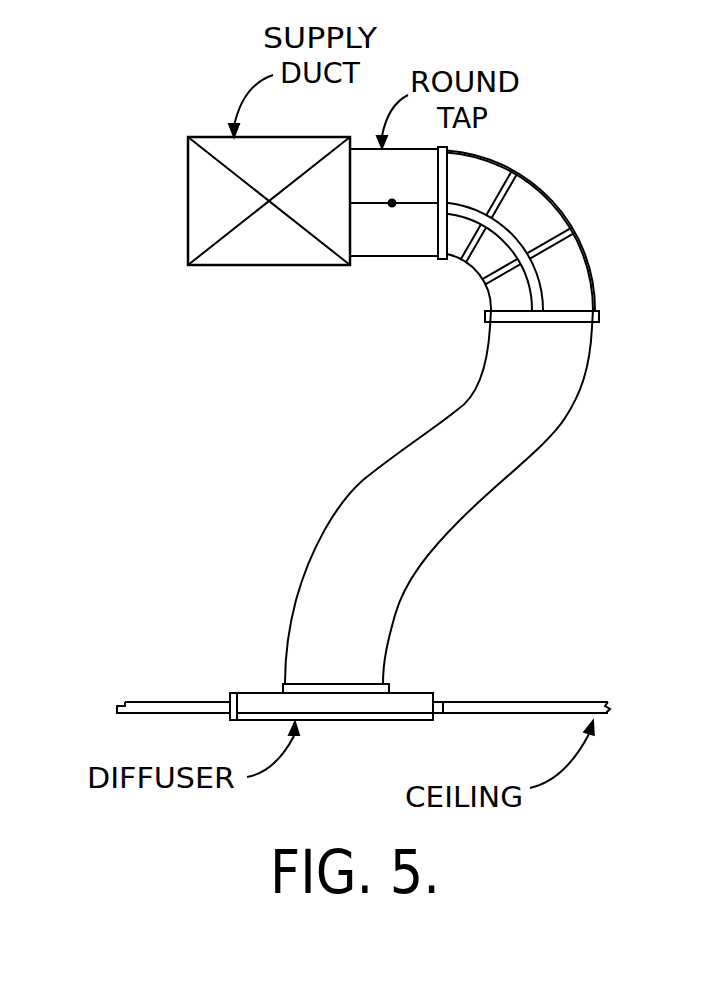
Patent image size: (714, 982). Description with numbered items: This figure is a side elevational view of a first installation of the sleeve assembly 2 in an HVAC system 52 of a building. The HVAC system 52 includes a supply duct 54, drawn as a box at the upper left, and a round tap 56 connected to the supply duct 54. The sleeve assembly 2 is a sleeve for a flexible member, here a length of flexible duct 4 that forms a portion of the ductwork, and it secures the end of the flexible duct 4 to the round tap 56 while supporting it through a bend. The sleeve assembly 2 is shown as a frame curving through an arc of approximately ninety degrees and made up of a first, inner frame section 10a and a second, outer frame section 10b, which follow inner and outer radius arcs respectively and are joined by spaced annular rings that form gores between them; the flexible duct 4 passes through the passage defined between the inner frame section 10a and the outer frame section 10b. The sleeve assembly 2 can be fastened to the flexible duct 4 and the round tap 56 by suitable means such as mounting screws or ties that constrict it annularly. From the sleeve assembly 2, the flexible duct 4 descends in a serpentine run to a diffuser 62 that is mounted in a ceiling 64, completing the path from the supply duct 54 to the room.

The sleeve assembly 2 is at (543, 237).
The flexible duct 4 is at (523, 415).
The first (inner) frame section 10a is at (476, 277).
The second (outer) frame section 10b is at (545, 242).
The HVAC system 52 is at (603, 159).
The supply duct 54 is at (188, 265).
The round tap 56 is at (378, 263).
The diffuser 62 is at (433, 693).
The ceiling 64 is at (182, 702).